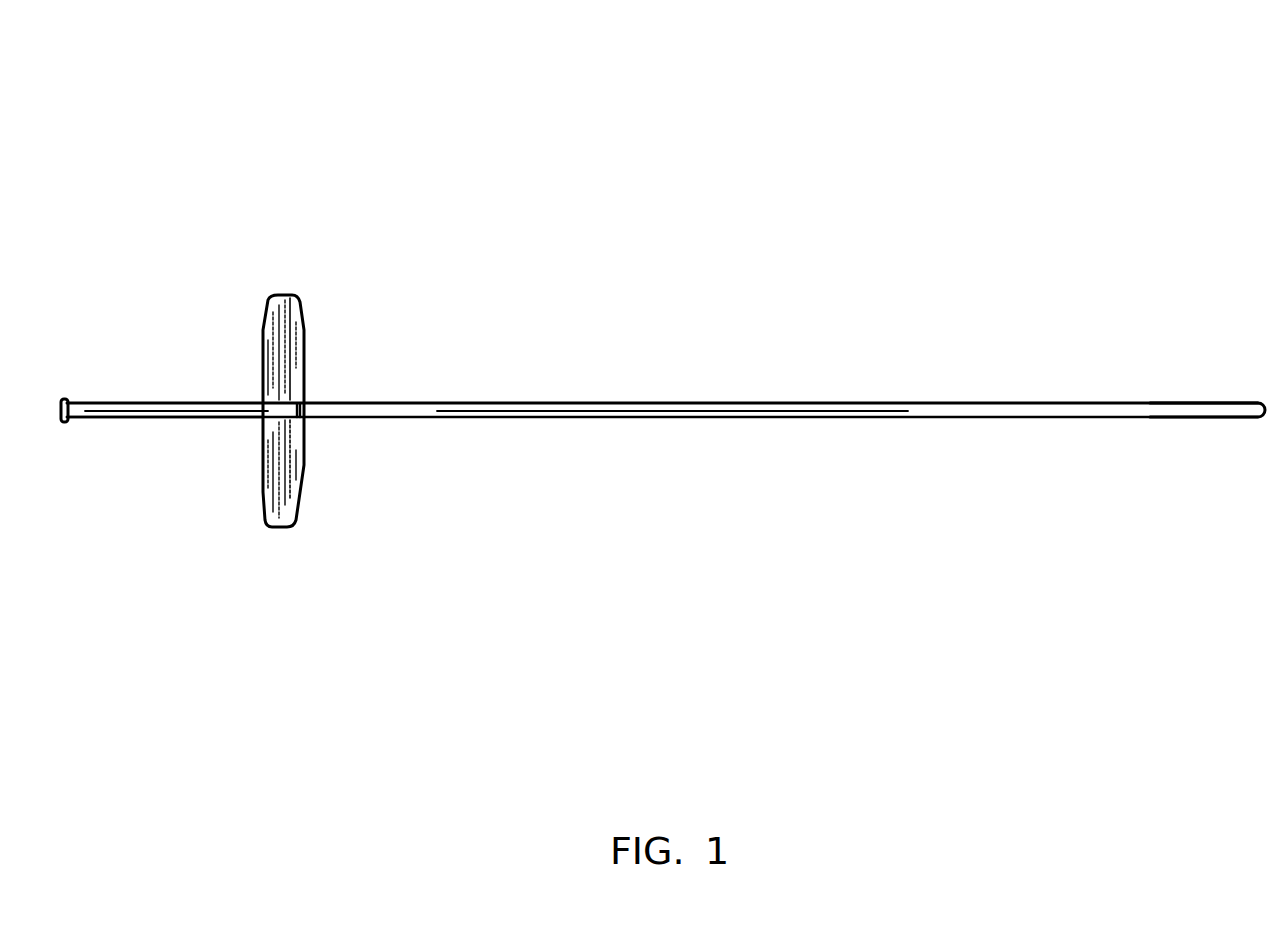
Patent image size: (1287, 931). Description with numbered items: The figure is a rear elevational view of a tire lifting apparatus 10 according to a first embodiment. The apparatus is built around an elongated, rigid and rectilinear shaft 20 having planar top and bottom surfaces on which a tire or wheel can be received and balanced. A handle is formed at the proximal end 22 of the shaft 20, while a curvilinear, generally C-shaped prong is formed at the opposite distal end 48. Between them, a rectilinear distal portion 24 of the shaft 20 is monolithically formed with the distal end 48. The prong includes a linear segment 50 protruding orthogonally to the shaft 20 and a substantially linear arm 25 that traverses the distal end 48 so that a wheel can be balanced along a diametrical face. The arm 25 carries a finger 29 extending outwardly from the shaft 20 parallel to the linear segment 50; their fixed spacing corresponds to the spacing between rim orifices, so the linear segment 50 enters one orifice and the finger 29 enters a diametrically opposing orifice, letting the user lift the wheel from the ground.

The tire lifting apparatus 10 is at (183, 140).
The shaft 20 is at (582, 403).
The proximal end 22 is at (1142, 413).
The distal portion 24 is at (237, 418).
The arm 25 is at (290, 348).
The finger 29 is at (305, 410).
The distal end 48 is at (120, 408).
The linear segment 50 is at (65, 424).